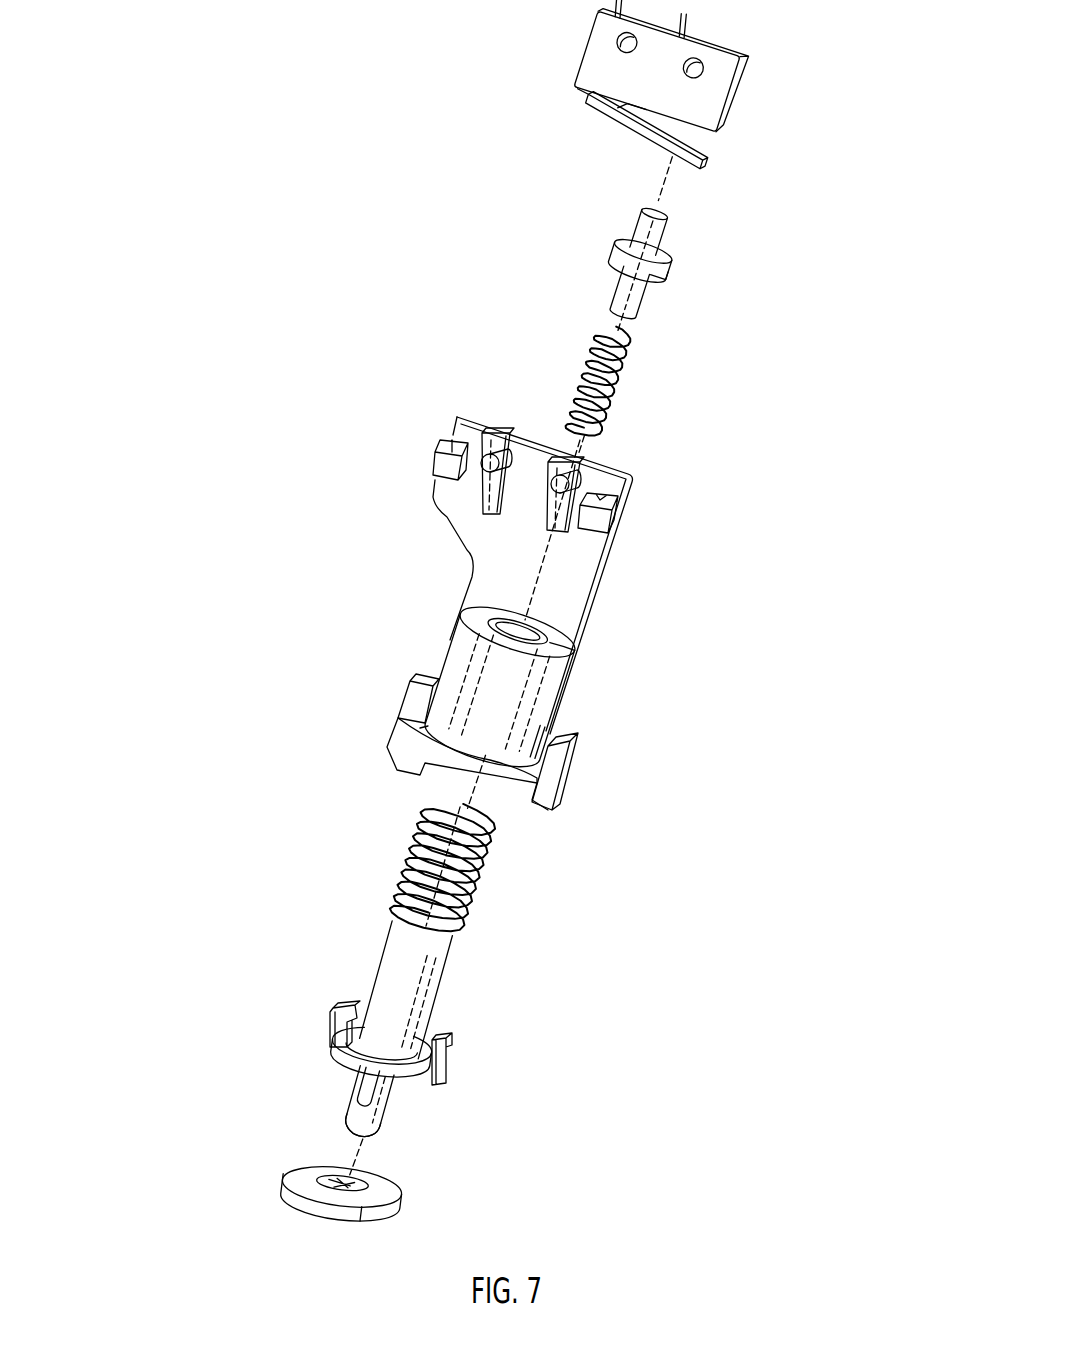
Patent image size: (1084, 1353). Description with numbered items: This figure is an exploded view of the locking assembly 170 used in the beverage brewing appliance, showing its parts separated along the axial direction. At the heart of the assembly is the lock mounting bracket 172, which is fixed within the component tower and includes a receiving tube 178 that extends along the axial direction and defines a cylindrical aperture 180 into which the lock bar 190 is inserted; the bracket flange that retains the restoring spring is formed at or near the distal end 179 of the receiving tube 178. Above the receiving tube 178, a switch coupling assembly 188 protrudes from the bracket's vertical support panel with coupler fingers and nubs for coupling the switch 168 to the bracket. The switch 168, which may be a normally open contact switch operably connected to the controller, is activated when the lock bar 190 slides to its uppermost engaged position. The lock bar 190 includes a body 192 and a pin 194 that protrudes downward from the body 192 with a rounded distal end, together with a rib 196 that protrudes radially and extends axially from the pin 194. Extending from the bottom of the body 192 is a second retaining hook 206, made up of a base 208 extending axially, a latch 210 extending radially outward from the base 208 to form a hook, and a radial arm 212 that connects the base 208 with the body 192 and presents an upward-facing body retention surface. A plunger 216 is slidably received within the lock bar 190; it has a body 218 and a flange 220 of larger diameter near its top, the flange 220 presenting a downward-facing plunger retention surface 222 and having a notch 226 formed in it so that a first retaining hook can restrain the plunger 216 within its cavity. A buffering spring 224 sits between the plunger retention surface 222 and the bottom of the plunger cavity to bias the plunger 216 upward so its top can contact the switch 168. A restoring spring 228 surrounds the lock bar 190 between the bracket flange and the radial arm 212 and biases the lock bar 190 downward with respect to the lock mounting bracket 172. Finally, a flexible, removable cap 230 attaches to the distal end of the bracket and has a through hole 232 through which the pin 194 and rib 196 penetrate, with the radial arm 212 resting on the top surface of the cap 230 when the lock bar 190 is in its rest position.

The switch 168 is at (588, 53).
The locking assembly 170 is at (312, 99).
The lock mounting bracket 172 is at (380, 509).
The receiving tube 178 is at (530, 688).
The distal end 179 is at (566, 639).
The cylindrical aperture 180 is at (520, 630).
The switch coupling assembly 188 is at (636, 507).
The lock bar 190 is at (567, 991).
The body 192 is at (380, 970).
The pin 194 is at (352, 1112).
The rib 196 is at (357, 1128).
The second retaining hook 206 is at (461, 1074).
The base 208 is at (438, 1070).
The latch 210 is at (447, 1043).
The radial arm 212 is at (420, 1069).
The plunger 216 is at (602, 266).
The body 218 is at (620, 298).
The flange 220 is at (637, 225).
The plunger retention surface 222 is at (659, 272).
The buffering spring 224 is at (658, 381).
The notch 226 is at (650, 236).
The restoring spring 228 is at (490, 848).
The cap 230 is at (371, 1211).
The through hole 232 is at (352, 1185).